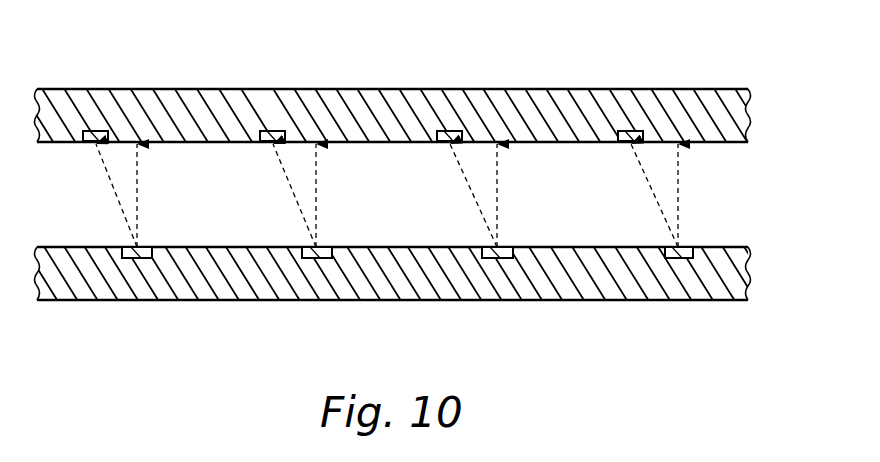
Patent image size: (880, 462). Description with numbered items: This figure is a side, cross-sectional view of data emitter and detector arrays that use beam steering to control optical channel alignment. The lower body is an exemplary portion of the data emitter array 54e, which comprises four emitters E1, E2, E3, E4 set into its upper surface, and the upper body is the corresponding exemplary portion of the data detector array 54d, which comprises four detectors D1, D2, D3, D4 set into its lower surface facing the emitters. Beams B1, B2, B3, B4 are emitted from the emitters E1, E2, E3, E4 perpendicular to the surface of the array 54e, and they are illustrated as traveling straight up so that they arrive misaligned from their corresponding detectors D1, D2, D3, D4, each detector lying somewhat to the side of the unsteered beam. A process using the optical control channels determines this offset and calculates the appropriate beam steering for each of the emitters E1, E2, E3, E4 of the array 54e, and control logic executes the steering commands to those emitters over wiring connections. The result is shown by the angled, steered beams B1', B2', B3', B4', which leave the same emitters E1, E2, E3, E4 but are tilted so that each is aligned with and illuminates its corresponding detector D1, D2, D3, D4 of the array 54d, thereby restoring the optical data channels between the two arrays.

The data detector array 54d is at (748, 116).
The data emitter array 54e is at (750, 270).
The detector D1 is at (95, 131).
The detector D2 is at (273, 131).
The detector D3 is at (451, 131).
The detector D4 is at (631, 131).
The emitter E1 is at (142, 258).
The emitter E2 is at (320, 258).
The emitter E3 is at (490, 258).
The emitter E4 is at (680, 258).
The beam B1 is at (175, 195).
The beam B2 is at (357, 195).
The beam B3 is at (530, 195).
The beam B4 is at (713, 195).
The steered beam B1' is at (84, 195).
The steered beam B2' is at (269, 195).
The steered beam B3' is at (448, 195).
The steered beam B4' is at (628, 195).